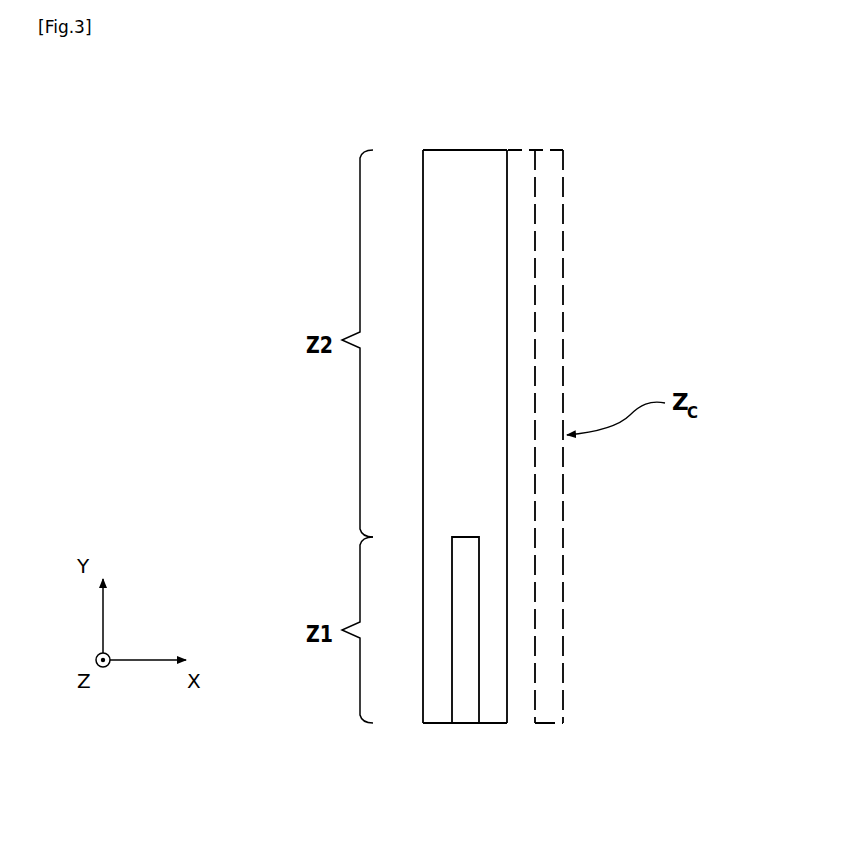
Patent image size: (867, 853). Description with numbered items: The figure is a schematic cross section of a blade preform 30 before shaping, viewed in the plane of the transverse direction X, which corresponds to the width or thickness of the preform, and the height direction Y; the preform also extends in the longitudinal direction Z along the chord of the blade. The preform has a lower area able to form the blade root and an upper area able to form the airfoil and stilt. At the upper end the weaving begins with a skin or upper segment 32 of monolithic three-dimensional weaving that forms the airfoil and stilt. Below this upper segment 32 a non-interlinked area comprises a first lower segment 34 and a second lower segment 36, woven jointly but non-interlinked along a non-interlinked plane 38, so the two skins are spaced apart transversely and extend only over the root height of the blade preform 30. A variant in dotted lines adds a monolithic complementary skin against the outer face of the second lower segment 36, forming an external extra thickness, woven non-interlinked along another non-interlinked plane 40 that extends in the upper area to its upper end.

The blade preform 30 is at (579, 476).
The upper segment 32 is at (454, 476).
The first lower segment 34 is at (438, 713).
The second lower segment 36 is at (493, 713).
The non-interlinked plane 38 is at (467, 713).
The non-interlinked plane 40 is at (518, 246).